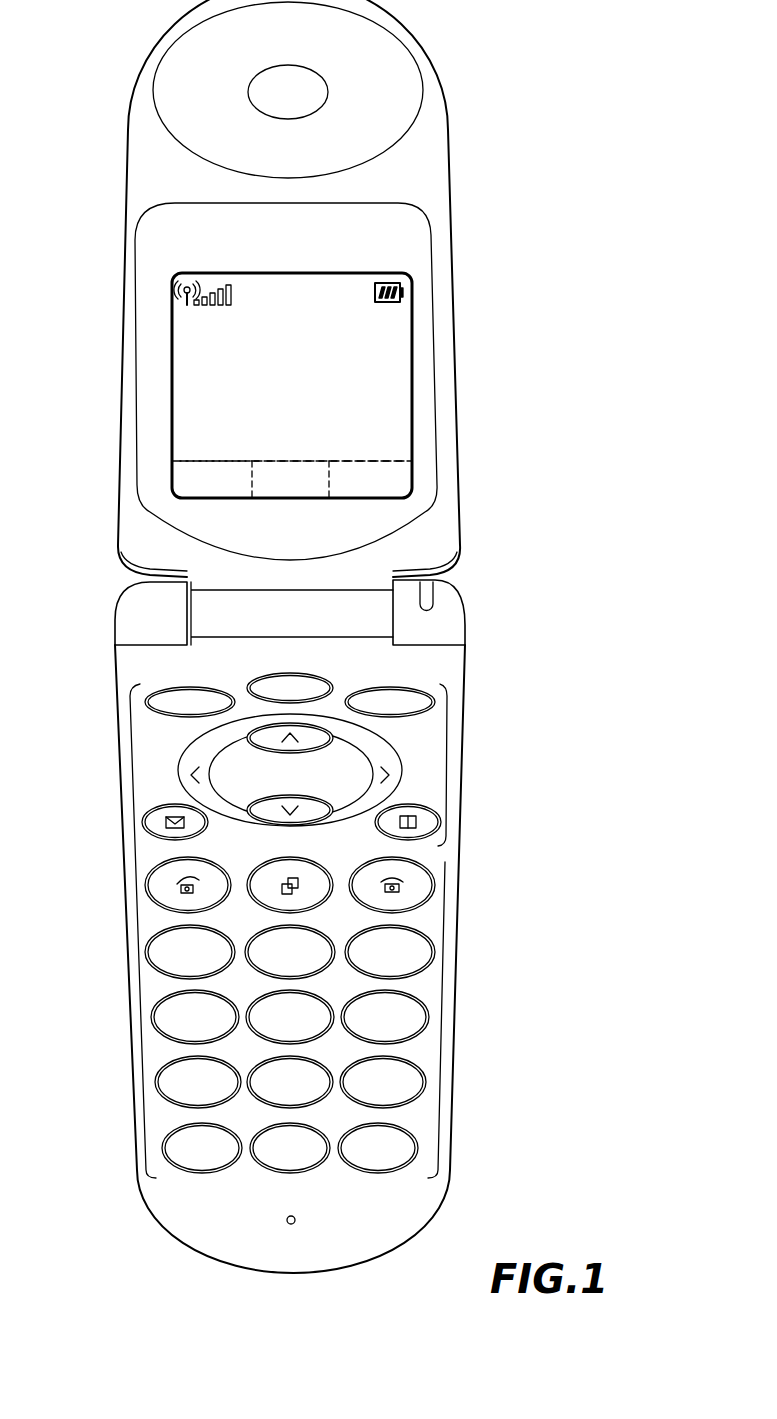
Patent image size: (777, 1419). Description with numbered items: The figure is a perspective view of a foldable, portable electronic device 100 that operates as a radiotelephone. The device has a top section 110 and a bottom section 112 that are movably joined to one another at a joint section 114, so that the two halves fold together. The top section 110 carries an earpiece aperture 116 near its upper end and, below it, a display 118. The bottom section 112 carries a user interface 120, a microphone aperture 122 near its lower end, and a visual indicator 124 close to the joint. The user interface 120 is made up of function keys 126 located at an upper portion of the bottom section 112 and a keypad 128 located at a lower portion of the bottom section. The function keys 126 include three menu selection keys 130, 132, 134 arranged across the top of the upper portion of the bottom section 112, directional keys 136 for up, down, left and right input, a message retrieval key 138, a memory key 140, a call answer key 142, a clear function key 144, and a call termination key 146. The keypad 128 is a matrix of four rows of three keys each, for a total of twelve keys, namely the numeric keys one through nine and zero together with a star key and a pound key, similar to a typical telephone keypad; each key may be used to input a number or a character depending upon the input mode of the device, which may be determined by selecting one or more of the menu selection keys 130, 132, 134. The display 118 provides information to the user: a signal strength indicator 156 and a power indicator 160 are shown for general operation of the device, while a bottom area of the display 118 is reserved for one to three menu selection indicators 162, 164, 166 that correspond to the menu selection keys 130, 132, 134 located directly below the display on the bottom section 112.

The portable electronic device 100 is at (311, 656).
The top section 110 is at (316, 288).
The bottom section 112 is at (285, 946).
The joint section 114 is at (263, 603).
The earpiece aperture 116 is at (286, 76).
The display 118 is at (343, 365).
The user interface 120 is at (130, 776).
The microphone aperture 122 is at (291, 1226).
The visual indicator 124 is at (428, 597).
The function keys 126 is at (446, 762).
The keypad 128 is at (446, 1013).
The menu selection key 130 is at (192, 698).
The menu selection key 132 is at (302, 685).
The menu selection key 134 is at (387, 700).
The directional keys 136 is at (247, 763).
The message retrieval key 138 is at (150, 822).
The memory key 140 is at (430, 822).
The call answer key 142 is at (160, 886).
The clear function key 144 is at (285, 868).
The call termination key 146 is at (420, 886).
The signal strength indicator 156 is at (219, 290).
The power indicator 160 is at (403, 292).
The menu selection indicator 162 is at (213, 463).
The menu selection indicator 164 is at (281, 463).
The menu selection indicator 166 is at (347, 463).